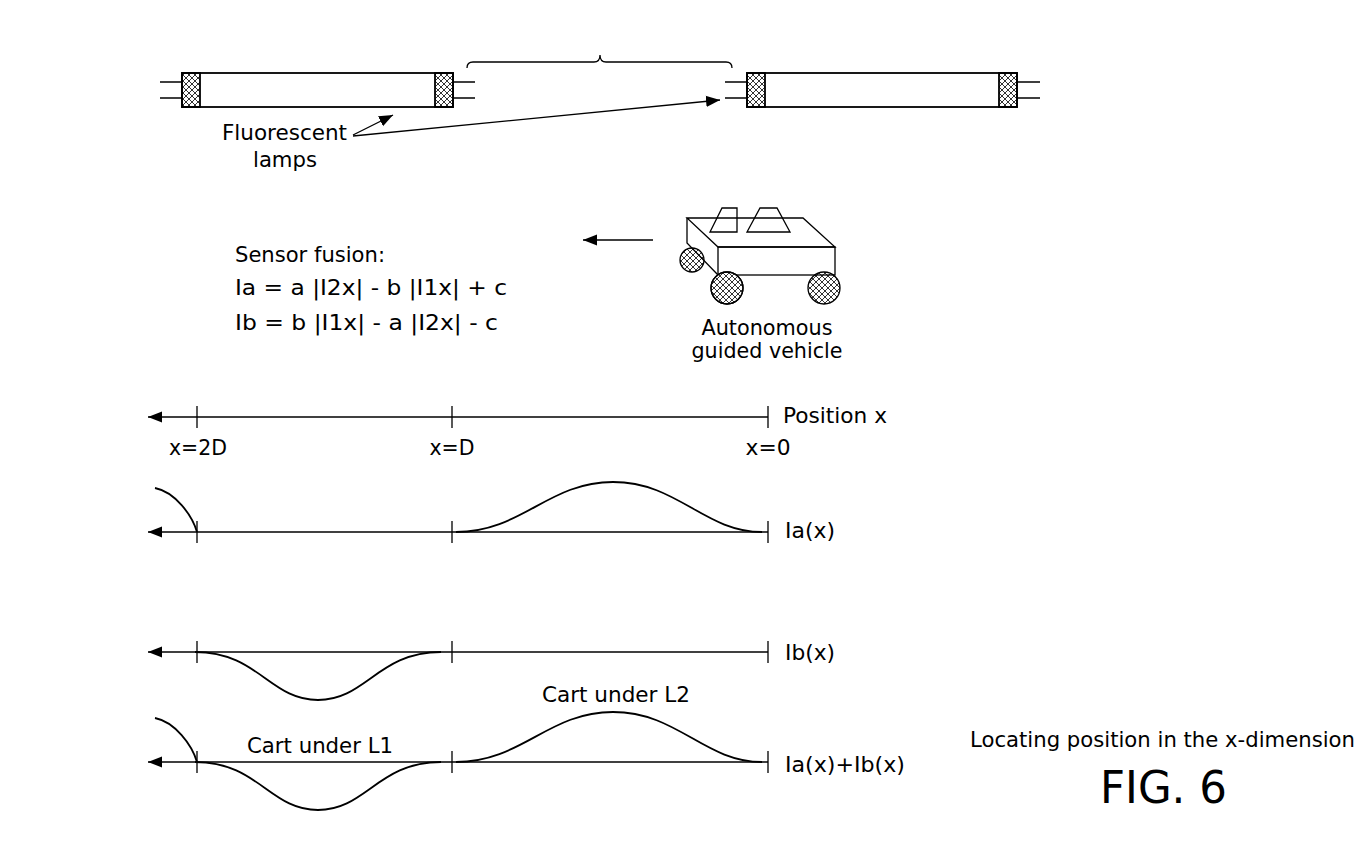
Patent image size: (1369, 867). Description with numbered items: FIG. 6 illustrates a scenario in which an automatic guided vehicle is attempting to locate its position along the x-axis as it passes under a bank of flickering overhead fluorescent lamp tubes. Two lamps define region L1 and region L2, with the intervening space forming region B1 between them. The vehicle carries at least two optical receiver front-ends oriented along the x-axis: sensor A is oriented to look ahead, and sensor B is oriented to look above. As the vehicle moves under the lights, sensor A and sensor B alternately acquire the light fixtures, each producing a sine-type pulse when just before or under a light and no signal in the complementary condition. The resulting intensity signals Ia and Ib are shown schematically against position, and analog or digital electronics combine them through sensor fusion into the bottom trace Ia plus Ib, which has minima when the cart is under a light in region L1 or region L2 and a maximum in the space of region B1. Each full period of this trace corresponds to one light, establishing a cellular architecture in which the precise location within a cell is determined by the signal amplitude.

The region L1 is at (450, 68).
The region L2 is at (750, 68).
The region B1 is at (599, 48).
The sensor A is at (453, 107).
The sensor B is at (768, 107).